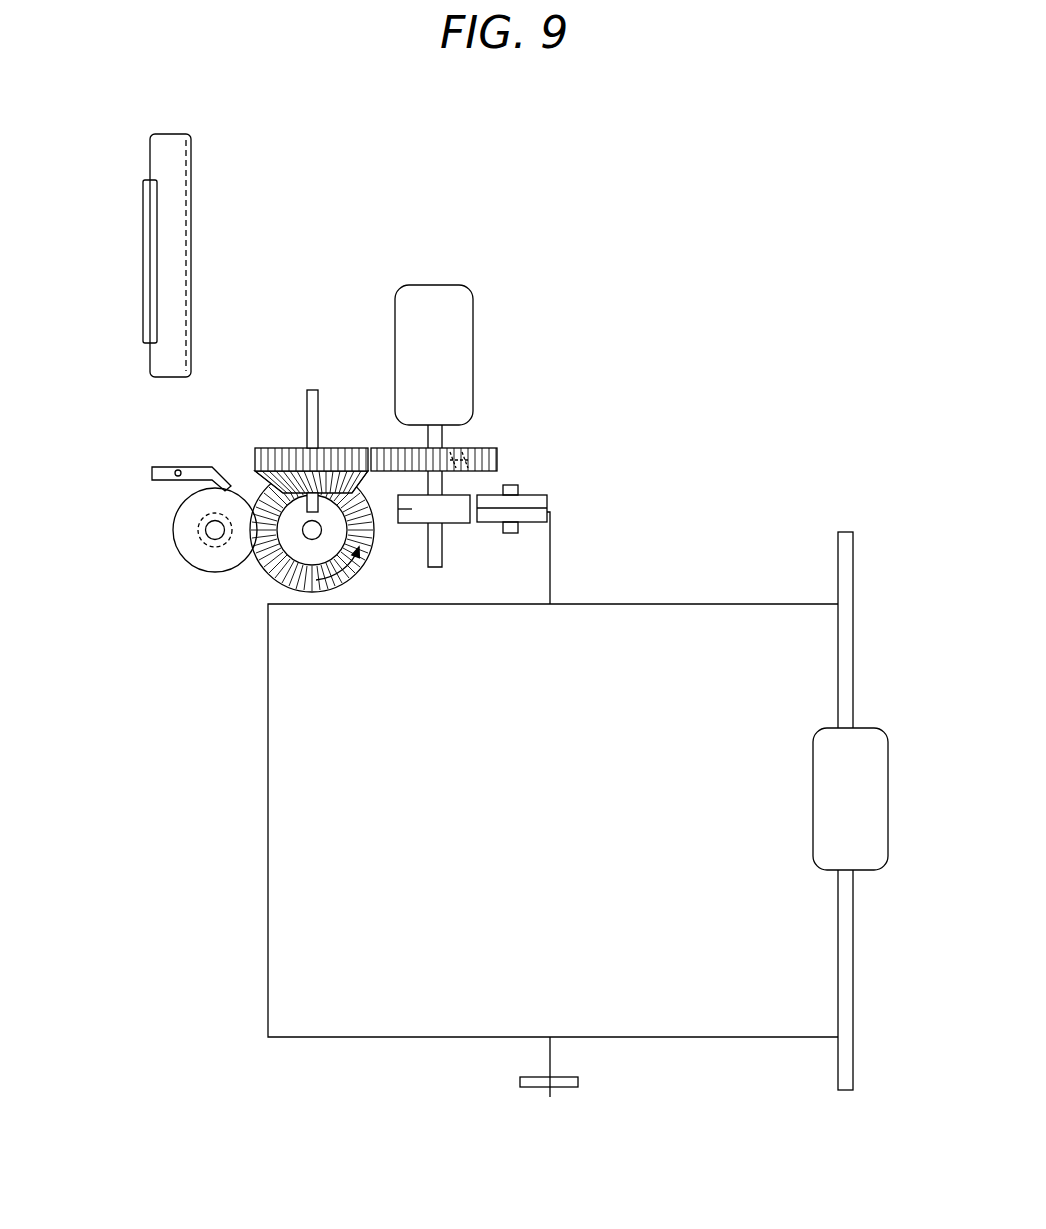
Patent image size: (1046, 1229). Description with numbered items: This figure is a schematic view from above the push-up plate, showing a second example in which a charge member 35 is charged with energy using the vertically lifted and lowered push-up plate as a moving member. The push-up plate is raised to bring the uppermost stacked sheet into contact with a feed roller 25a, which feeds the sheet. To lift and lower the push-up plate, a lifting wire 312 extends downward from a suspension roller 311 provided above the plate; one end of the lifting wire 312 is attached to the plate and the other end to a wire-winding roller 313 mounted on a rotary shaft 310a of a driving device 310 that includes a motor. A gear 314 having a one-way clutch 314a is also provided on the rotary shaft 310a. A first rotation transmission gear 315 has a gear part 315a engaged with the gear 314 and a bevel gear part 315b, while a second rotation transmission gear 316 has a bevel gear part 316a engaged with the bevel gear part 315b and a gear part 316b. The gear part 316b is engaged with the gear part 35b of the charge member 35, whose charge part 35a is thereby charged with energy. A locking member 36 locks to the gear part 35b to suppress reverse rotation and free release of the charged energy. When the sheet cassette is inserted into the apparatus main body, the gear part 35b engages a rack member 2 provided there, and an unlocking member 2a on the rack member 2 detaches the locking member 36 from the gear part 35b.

The rack member 2 is at (175, 152).
The unlocking member 2a is at (150, 268).
The feed roller 25a is at (858, 750).
The charge member 35 is at (162, 542).
The charge part 35a is at (190, 532).
The gear part 35b is at (177, 553).
The locking member 36 is at (158, 467).
The driving device 310 is at (448, 310).
The rotary shaft 310a is at (434, 568).
The suspension roller 311 is at (530, 493).
The lifting wire 312 is at (552, 570).
The wire-winding roller 313 is at (452, 513).
The gear 314 is at (500, 458).
The one-way clutch 314a is at (470, 444).
The first rotation transmission gear 315 is at (312, 386).
The gear part 315a is at (333, 446).
The bevel gear part 315b is at (288, 446).
The second rotation transmission gear 316 is at (243, 623).
The bevel gear part 316a is at (283, 577).
The gear part 316b is at (262, 562).